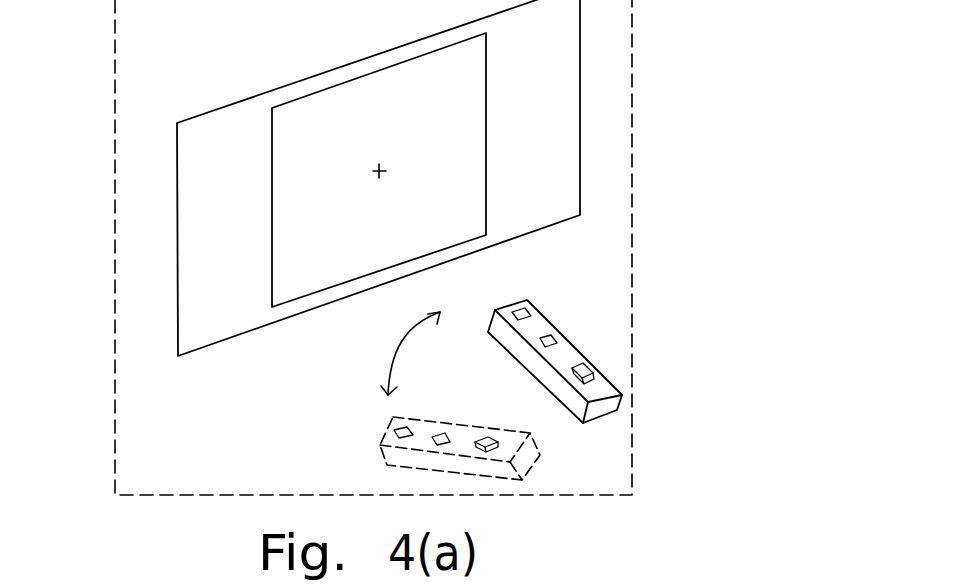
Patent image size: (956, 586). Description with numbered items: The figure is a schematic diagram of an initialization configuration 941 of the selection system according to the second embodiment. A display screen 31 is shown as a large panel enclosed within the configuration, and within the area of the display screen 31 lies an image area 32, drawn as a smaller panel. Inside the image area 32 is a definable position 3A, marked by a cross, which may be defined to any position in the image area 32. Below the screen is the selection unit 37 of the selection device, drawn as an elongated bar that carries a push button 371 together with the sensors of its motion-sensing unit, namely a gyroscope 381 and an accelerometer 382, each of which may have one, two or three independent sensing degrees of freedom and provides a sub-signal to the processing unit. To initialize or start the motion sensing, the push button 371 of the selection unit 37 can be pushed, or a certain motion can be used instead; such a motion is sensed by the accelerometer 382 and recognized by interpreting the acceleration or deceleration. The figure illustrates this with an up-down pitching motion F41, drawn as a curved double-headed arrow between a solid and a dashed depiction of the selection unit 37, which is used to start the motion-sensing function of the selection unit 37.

The initialization configuration 941 is at (115, 70).
The display screen 31 is at (240, 100).
The image area 32 is at (331, 85).
The definable position 3A is at (378, 172).
The selection unit 37 is at (540, 322).
The gyroscope 381 is at (517, 312).
The accelerometer 382 is at (552, 340).
The push button 371 is at (583, 368).
The up-down pitching motion F41 is at (395, 358).